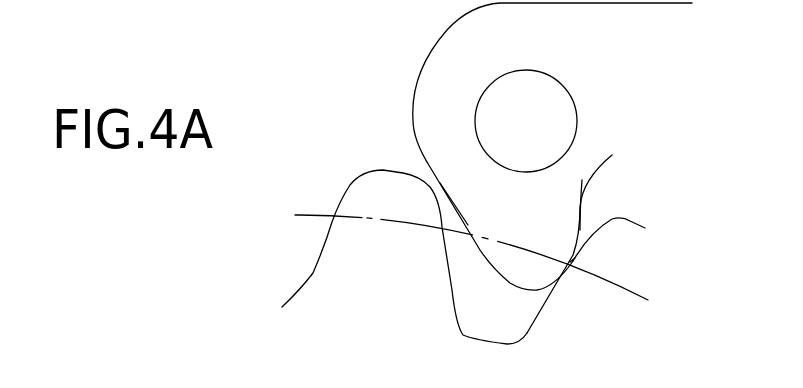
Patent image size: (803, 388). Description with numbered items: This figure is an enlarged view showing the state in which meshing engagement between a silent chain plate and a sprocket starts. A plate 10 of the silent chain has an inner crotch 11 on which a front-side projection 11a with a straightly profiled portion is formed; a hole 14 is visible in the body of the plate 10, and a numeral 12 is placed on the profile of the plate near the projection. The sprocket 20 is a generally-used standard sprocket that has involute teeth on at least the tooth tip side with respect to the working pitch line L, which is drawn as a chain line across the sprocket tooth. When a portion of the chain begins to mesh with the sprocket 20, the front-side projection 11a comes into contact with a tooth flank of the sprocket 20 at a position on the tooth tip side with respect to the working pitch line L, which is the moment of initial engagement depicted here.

The plate 10 is at (430, 47).
The inner crotch 11 is at (590, 197).
The front-side projection 11a is at (572, 259).
The cam surface 12 is at (458, 205).
The shaft hole 14 is at (551, 77).
The sprocket 20 is at (405, 293).
The working pitch line L is at (627, 284).